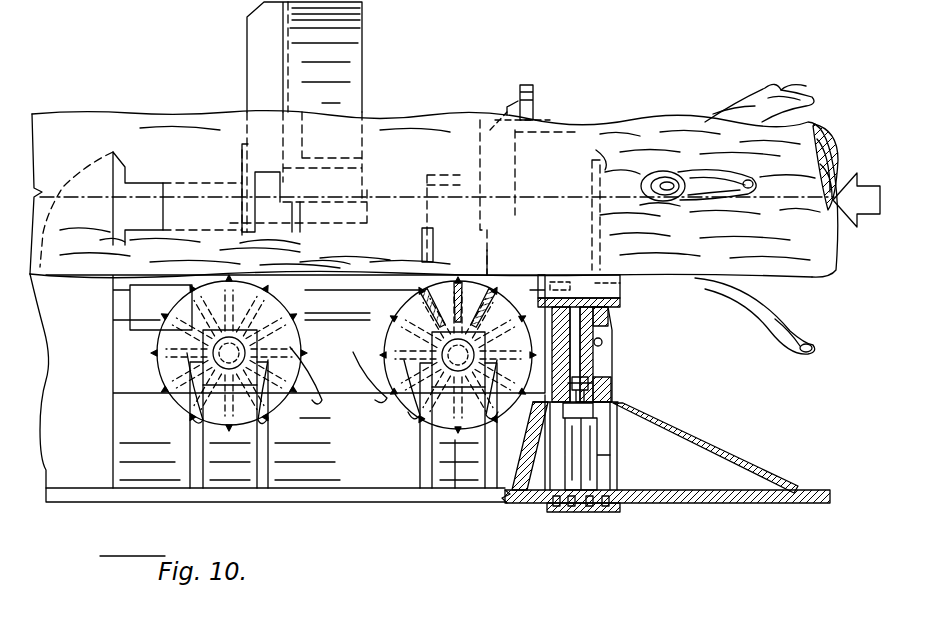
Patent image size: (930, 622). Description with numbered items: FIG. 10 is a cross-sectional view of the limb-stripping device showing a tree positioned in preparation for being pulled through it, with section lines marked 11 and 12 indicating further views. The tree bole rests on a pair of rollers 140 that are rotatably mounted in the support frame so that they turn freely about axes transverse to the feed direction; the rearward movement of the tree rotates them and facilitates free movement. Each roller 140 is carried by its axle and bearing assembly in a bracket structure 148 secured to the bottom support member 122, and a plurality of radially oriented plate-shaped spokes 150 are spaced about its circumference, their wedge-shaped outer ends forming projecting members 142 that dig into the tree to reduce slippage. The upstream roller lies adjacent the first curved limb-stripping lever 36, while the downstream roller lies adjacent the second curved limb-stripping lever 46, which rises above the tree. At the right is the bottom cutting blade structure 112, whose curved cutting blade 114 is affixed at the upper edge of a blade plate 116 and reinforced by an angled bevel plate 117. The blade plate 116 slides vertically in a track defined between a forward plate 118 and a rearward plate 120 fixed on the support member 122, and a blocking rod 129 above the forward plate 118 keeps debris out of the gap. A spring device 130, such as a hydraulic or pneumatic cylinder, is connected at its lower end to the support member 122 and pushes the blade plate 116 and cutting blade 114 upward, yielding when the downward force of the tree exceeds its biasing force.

The curved limb-stripping lever 46 is at (292, 50).
The curved cutting and limb-stripping lever 36 is at (535, 100).
The roller 140 is at (152, 365).
The spokes 150 is at (452, 305).
The projecting members 142 is at (342, 389).
The bracket structure 148 is at (183, 444).
The cutting blade 114 is at (600, 306).
The bevel plate 117 is at (605, 312).
The rod 129 is at (603, 342).
The rearward plate 120 is at (565, 358).
The blade plate 116 is at (604, 395).
The bottom cutting blade structure 112 is at (673, 394).
The forward plate 118 is at (620, 402).
The spring device 130 is at (590, 452).
The bottom support member 122 is at (755, 500).
The section line 11- 11 is at (580, 580).
The section line 12- 12 is at (410, 537).